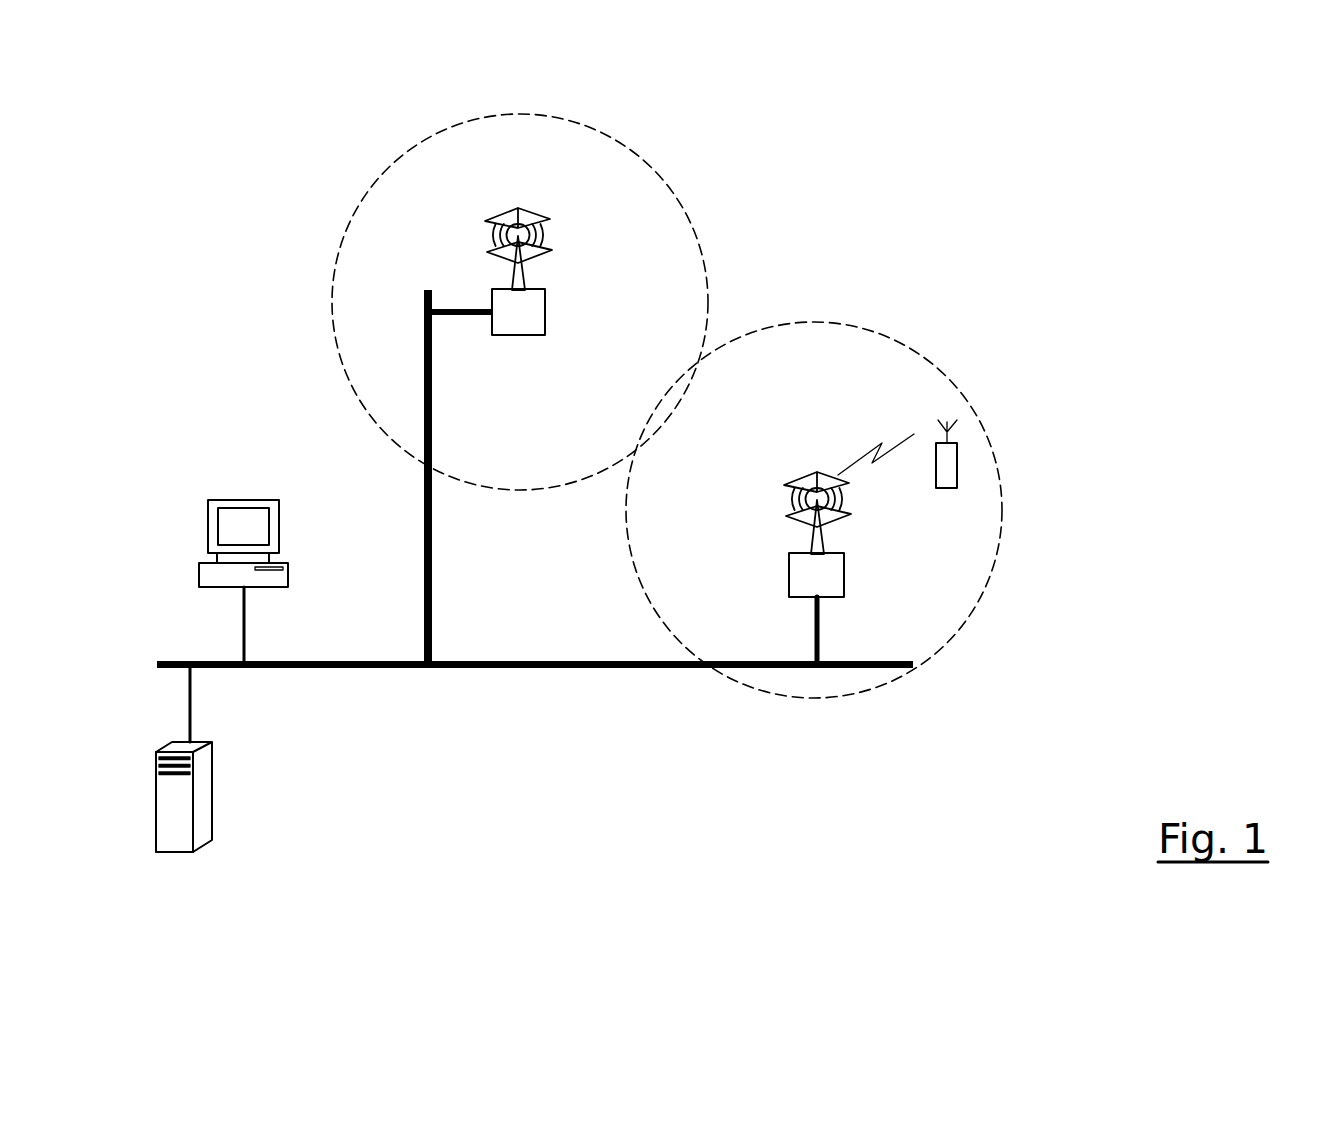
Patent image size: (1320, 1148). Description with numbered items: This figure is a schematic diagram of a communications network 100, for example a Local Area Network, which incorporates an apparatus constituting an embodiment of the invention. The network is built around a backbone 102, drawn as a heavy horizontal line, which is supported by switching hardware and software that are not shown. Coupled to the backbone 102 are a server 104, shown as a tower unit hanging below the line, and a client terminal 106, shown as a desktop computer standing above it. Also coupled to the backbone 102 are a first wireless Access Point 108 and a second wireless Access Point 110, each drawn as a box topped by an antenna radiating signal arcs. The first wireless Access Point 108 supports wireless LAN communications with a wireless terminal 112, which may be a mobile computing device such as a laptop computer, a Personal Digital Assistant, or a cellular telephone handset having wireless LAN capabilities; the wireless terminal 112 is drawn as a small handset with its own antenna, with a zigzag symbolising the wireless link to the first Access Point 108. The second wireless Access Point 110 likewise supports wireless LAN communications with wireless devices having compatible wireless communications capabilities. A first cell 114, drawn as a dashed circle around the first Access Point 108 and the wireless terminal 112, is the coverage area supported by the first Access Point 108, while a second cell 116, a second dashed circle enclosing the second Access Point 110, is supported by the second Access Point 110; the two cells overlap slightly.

The communications network 100 is at (1000, 207).
The backbone 102 is at (566, 668).
The server 104 is at (212, 797).
The client terminal 106 is at (207, 522).
The first wireless Access Point 108 is at (844, 573).
The second wireless Access Point 110 is at (524, 335).
The wireless terminal 112 is at (943, 487).
The first cell 114 is at (1002, 518).
The second cell 116 is at (652, 168).